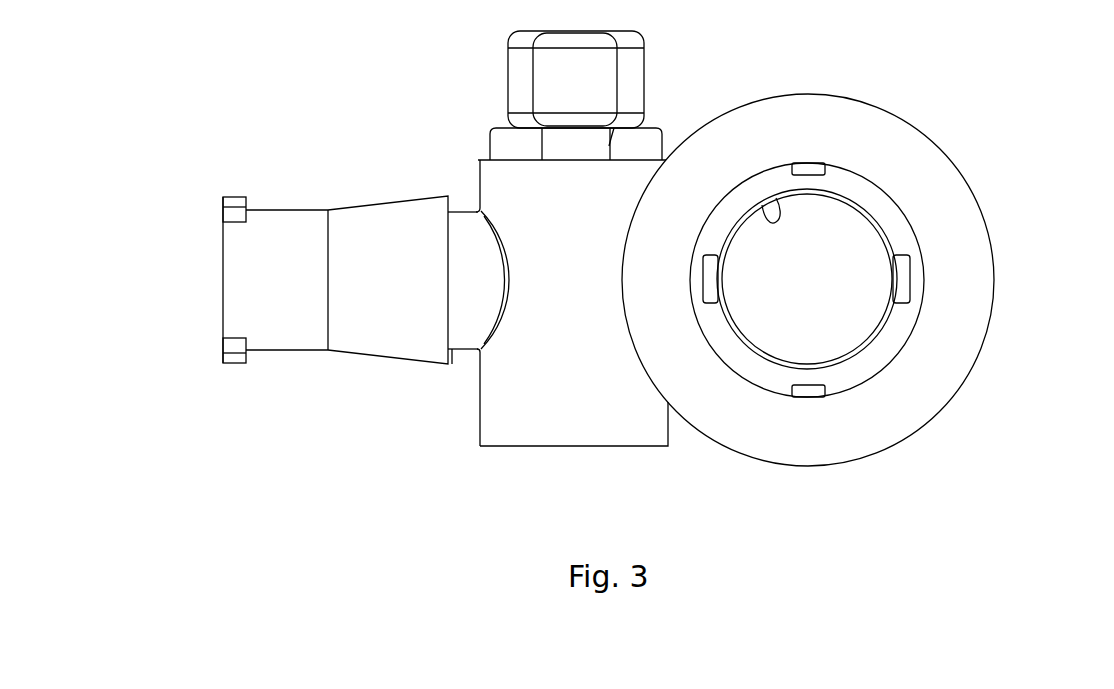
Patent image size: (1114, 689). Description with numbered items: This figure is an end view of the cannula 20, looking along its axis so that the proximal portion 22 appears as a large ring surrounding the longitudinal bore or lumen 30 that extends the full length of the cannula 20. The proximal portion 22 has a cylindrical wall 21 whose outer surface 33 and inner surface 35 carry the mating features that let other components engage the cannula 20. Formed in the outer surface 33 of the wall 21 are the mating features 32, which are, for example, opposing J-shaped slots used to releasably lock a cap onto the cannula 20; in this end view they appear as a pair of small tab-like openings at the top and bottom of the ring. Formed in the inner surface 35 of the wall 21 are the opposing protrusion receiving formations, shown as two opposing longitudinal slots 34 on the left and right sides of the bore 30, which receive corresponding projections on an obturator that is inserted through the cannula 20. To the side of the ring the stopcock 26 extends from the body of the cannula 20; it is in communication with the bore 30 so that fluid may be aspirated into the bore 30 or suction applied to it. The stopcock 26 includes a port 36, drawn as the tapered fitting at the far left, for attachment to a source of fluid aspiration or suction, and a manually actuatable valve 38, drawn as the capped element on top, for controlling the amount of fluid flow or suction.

The cannula 20 is at (1047, 106).
The cylindrical wall 21 is at (775, 382).
The proximal portion 22 is at (955, 221).
The stopcock 26 is at (465, 361).
The longitudinal bore 30 is at (848, 327).
The mating features 32 is at (815, 163).
The outer surface 33 is at (867, 383).
The longitudinal slots 34 is at (713, 305).
The inner surface 35 is at (762, 205).
The port 36 is at (252, 295).
The manually actuatable valve 38 is at (548, 80).